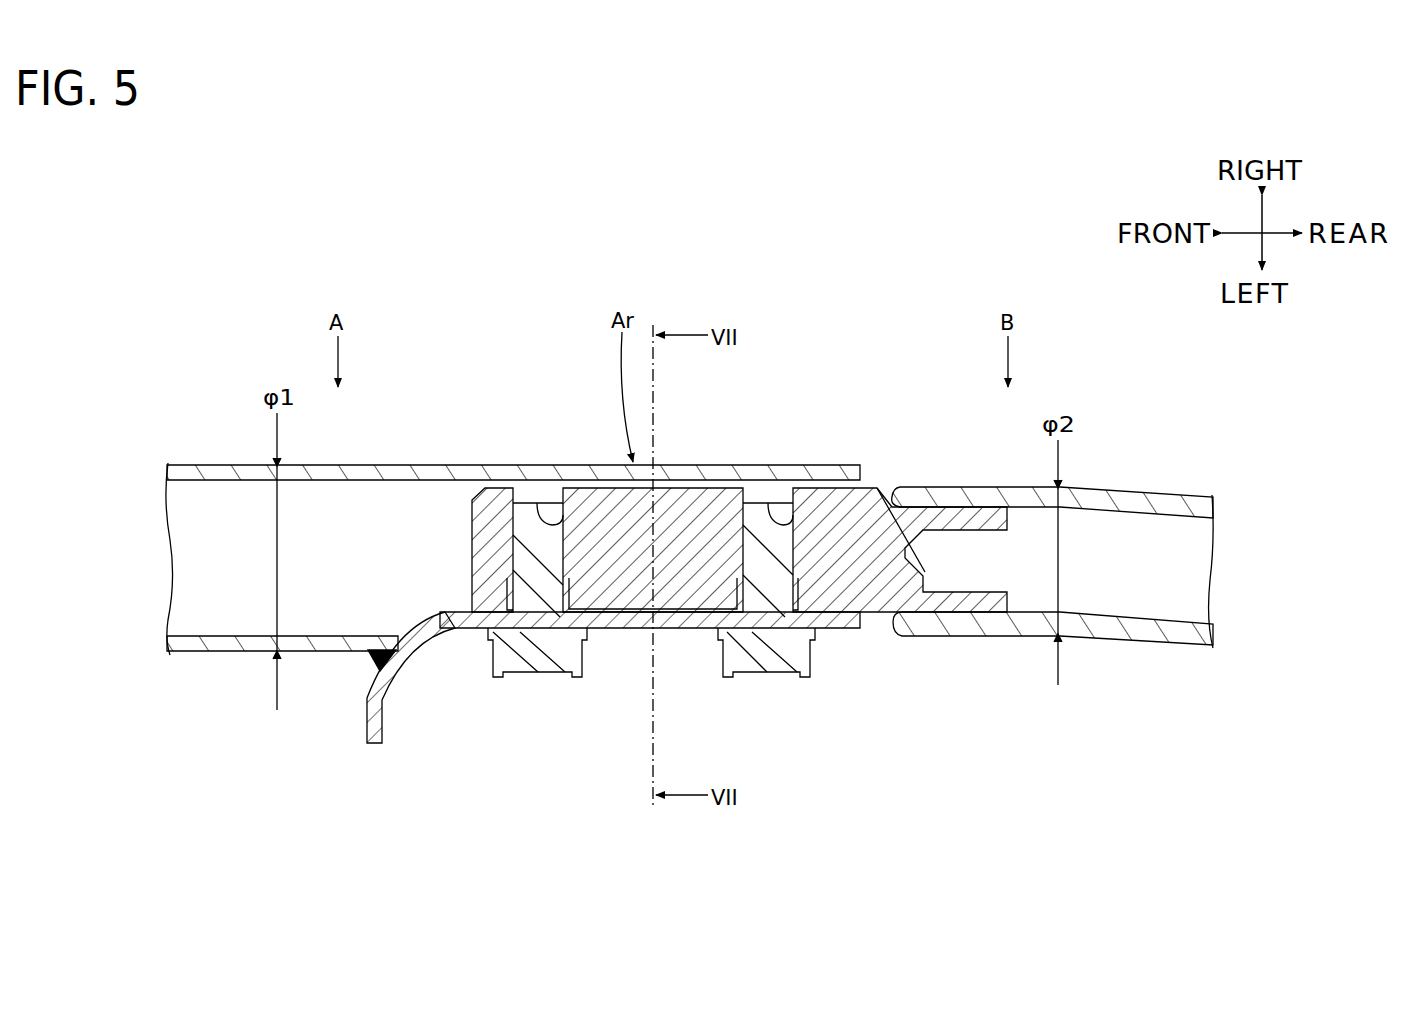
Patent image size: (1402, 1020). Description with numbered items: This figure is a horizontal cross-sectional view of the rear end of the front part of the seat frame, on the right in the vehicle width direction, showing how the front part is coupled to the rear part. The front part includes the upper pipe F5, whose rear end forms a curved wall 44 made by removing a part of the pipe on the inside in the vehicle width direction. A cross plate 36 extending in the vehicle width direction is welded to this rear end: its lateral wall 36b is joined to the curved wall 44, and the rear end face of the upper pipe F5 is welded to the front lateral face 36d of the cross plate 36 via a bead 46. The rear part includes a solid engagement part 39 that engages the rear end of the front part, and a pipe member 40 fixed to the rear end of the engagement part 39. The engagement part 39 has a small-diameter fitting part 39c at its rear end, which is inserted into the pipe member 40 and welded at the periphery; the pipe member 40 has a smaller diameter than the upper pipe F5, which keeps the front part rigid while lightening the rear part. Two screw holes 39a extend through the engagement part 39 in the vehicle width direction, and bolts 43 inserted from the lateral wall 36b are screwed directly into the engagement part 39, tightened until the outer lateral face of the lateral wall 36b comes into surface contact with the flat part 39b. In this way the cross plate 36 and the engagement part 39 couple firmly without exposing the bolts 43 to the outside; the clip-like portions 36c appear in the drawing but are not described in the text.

The cross plate 36 is at (584, 706).
The lateral wall 36b is at (700, 629).
The clip portions of bracket 36c is at (528, 656).
The front lateral face 36d is at (368, 722).
The engagement part 39 is at (638, 541).
The screw hole 39a is at (537, 503).
The flat part 39b is at (626, 629).
The fitting part 39c is at (965, 505).
The pipe member 40 is at (1125, 490).
The bolt 43 is at (556, 662).
The curved wall 44 is at (708, 466).
The bead 46 is at (368, 653).
The upper pipe F5 is at (222, 465).